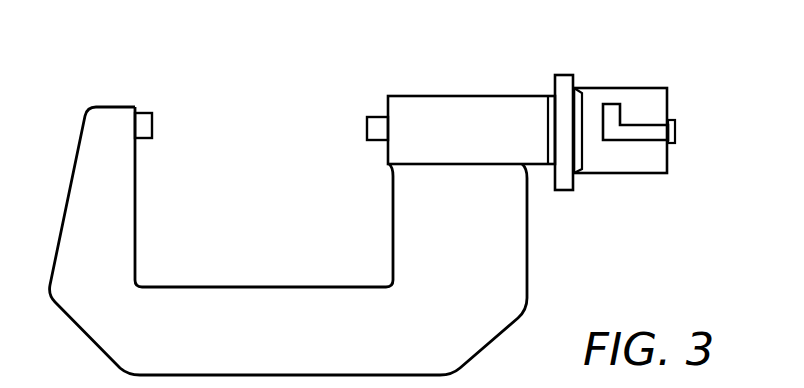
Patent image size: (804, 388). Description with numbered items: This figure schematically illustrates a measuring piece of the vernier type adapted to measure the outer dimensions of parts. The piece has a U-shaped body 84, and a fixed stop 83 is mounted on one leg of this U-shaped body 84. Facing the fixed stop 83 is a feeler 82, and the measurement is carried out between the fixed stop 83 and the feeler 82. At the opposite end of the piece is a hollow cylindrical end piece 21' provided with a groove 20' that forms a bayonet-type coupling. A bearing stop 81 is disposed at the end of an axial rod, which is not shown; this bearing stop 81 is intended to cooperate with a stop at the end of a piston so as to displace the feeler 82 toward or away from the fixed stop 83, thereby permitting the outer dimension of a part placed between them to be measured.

The U-shaped body 84 is at (263, 307).
The fixed stop 83 is at (153, 127).
The feeler 82 is at (373, 128).
The bearing stop 81 is at (676, 130).
The hollow cylindrical end piece 21' is at (624, 104).
The groove 20' is at (635, 164).